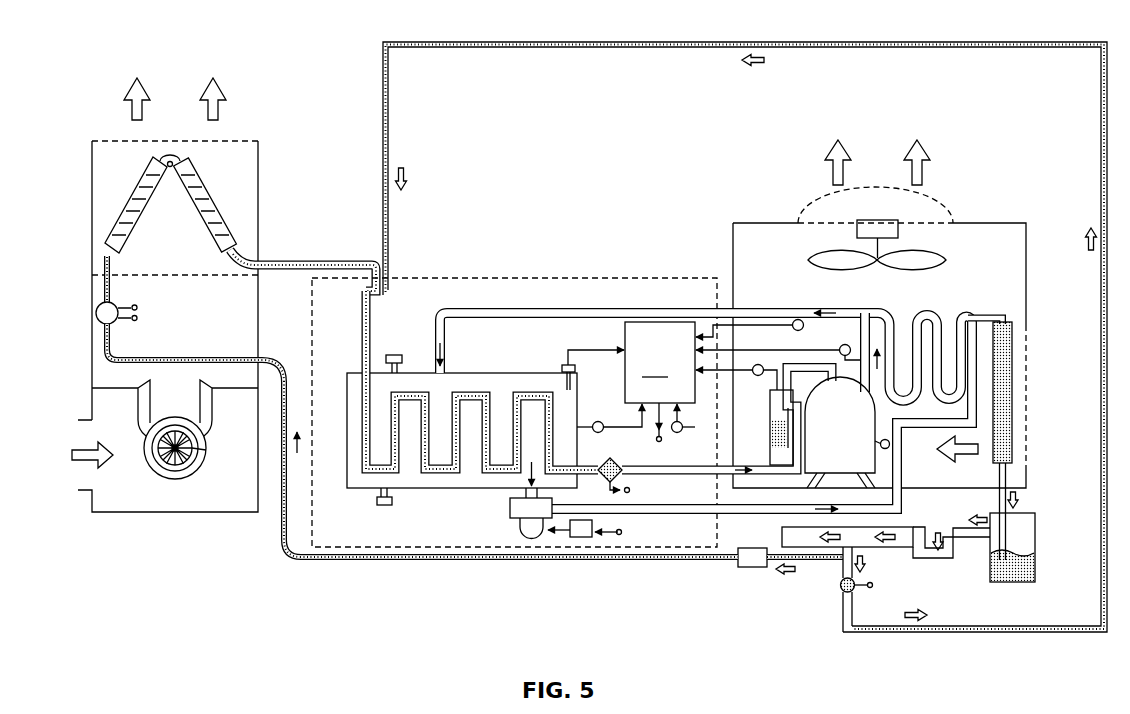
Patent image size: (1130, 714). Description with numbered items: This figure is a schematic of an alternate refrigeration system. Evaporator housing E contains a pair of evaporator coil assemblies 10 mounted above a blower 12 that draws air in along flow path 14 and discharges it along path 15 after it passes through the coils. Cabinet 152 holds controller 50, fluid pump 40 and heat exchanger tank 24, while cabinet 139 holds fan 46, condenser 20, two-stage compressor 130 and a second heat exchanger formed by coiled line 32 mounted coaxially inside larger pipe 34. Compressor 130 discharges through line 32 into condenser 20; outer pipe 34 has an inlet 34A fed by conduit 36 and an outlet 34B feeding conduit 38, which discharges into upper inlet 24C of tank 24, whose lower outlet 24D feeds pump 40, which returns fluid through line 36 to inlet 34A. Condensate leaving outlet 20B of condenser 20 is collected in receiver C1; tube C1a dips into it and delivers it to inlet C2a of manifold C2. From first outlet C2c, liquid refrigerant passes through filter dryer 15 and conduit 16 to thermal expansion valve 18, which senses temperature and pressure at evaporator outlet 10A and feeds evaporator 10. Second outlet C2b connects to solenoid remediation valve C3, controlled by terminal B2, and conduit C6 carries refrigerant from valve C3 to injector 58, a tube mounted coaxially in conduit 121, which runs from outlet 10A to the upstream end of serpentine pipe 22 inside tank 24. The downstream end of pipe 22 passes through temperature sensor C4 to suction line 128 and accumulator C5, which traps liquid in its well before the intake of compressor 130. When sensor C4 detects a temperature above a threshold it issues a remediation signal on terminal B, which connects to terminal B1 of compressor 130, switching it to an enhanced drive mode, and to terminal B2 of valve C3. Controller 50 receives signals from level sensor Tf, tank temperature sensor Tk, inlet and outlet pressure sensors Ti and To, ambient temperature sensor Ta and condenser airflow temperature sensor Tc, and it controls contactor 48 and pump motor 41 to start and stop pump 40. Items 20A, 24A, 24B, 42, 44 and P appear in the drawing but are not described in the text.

The evaporator coil assembly 10 is at (134, 238).
The evaporator outlet 10A is at (244, 249).
The blower 12 is at (193, 462).
The flow path 14 is at (108, 465).
The filter dryer 15 is at (129, 81).
The conduit 16 is at (423, 561).
The thermal expansion valve 18 is at (114, 300).
The condenser 20 is at (1013, 338).
The receiver inlet 20A is at (995, 316).
The condenser outlet 20B is at (1010, 477).
The serpentine pipe 22 is at (432, 478).
The heat exchanger tank 24 is at (345, 394).
The housing inlet fitting 24A is at (395, 355).
The housing drain fitting 24B is at (380, 507).
The upper inlet of tank 24C is at (455, 372).
The lower outlet of tank 24D is at (513, 491).
The heat-exchanging pipe 32 is at (966, 309).
The outer pipe 34 is at (925, 307).
The inlet of outer pipe 34A is at (976, 306).
The outlet of outer pipe 34B is at (884, 307).
The conduit 36 is at (903, 497).
The conduit 38 is at (785, 307).
The fluid pump 40 is at (511, 517).
The pump motor 41 is at (536, 538).
The air flow 42 is at (968, 463).
The exhaust air flow 44 is at (836, 139).
The fan 46 is at (806, 250).
The contactor 48 is at (590, 538).
The controller 50 is at (660, 382).
The injector 58 is at (355, 293).
The conduit 121 is at (310, 258).
The suction line 128 is at (771, 462).
The two stage compressor 130 is at (859, 437).
The cabinet 139 is at (786, 222).
The cabinet 152 is at (528, 278).
The evaporator housing E is at (258, 183).
The terminal B is at (629, 491).
The terminal B1 is at (889, 446).
The terminal B2 is at (881, 585).
The receiver C1 is at (1028, 543).
The tube C1a is at (1005, 541).
The manifold C2 is at (833, 548).
The manifold inlet C2a is at (915, 541).
The second manifold outlet C2b is at (843, 555).
The first manifold outlet C2c is at (807, 545).
The remediation valve C3 is at (846, 630).
The temperature sensor C4 is at (614, 461).
The accumulator C5 is at (785, 360).
The conduit C6 is at (596, 47).
The pressure signal P is at (617, 531).
The ambient air temperature sensor Ta is at (680, 433).
The condenser airflow temperature sensor Tc is at (793, 330).
The level sensor Tf is at (565, 363).
The inlet pressure sensor Ti is at (755, 376).
The tank temperature sensor Tk is at (599, 421).
The outlet pressure sensor To is at (845, 343).